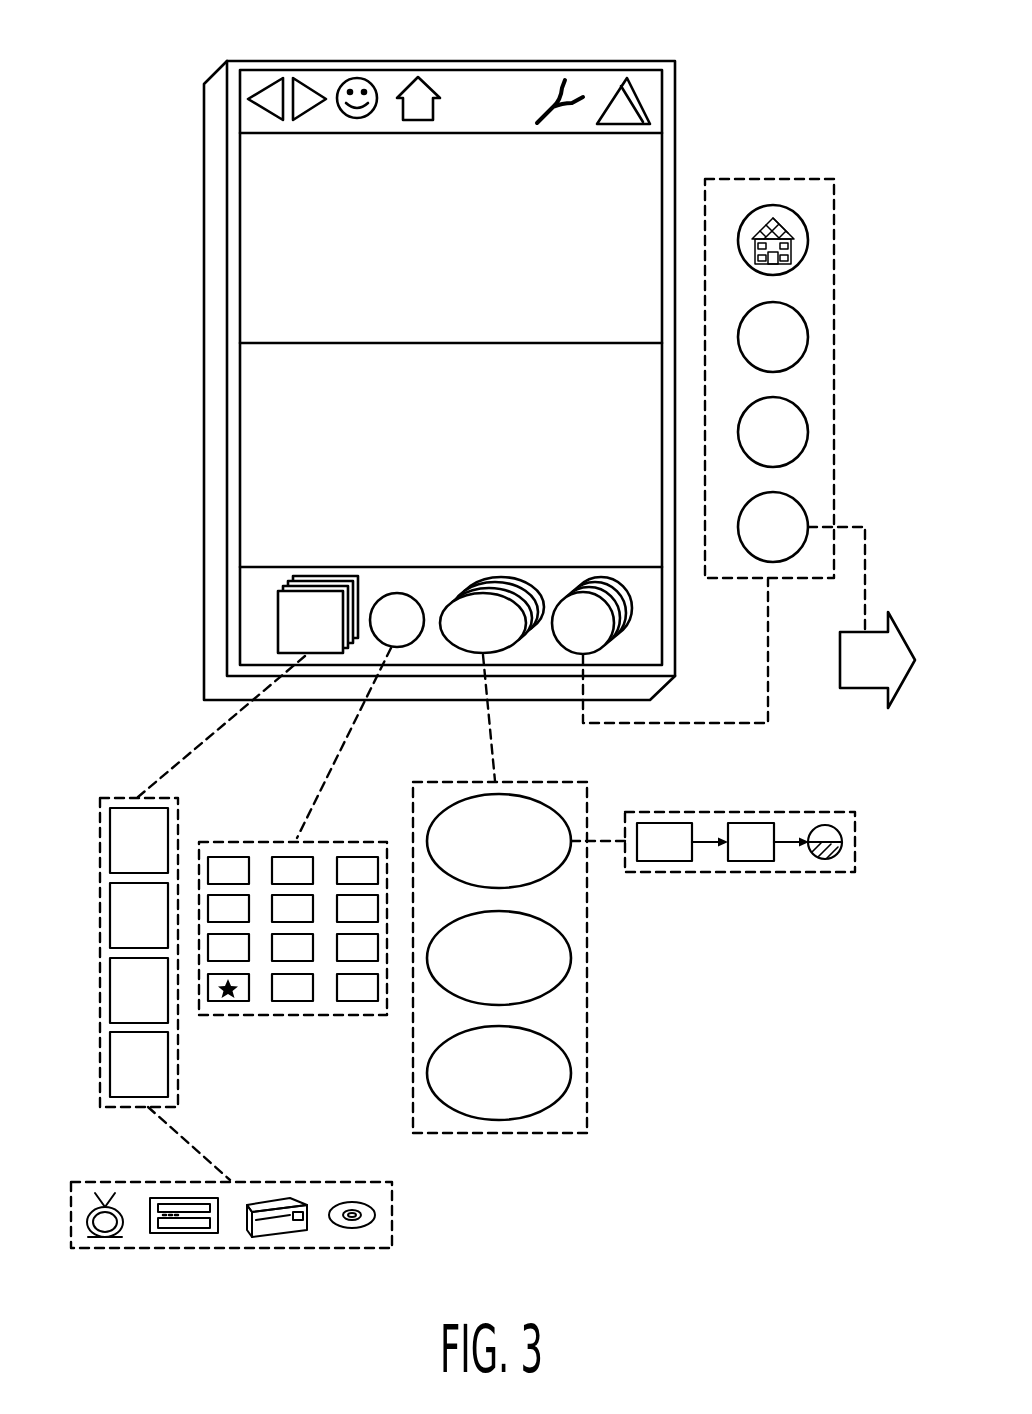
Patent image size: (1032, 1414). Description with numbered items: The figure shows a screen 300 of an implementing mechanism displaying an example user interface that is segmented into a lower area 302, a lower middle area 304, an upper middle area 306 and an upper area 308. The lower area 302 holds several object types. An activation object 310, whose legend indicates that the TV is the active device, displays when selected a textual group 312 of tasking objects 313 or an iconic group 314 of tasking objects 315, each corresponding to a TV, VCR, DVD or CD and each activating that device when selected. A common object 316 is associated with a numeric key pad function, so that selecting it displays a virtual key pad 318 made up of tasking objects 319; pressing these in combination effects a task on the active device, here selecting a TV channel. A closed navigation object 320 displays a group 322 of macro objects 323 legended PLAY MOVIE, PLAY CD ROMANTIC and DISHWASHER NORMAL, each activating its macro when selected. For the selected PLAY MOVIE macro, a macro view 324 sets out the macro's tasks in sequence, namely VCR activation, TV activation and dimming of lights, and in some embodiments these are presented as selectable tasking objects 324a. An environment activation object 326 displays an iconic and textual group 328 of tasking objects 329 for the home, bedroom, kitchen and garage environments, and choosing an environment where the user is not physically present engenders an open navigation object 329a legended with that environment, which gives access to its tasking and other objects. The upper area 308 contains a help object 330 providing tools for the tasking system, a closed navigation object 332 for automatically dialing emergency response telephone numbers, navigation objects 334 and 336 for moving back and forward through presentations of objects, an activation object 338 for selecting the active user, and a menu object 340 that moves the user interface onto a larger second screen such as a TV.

The screen 300 is at (154, 146).
The lower area 302 is at (248, 595).
The lower middle area 304 is at (258, 403).
The upper middle area 306 is at (258, 258).
The upper area 308 is at (653, 82).
The activation object 310 is at (328, 576).
The textual group of tasking objects 312 is at (129, 787).
The tasking objects 313 is at (110, 845).
The iconic group of tasking objects 314 is at (302, 1166).
The tasking objects 315 is at (345, 1228).
The common object 316 is at (400, 590).
The virtual key pad 318 is at (271, 833).
The tasking objects 319 is at (372, 856).
The closed navigation object 320 is at (515, 576).
The group of macro objects 322 is at (531, 1153).
The macro objects 323 is at (560, 870).
The macro view 324 is at (783, 800).
The tasking objects 324a is at (825, 859).
The environment activation object 326 is at (607, 578).
The group of tasking objects 328 is at (803, 150).
The tasking objects 329 is at (808, 243).
The open navigation object 329a is at (866, 690).
The help object 330 is at (553, 80).
The closed navigation object 332 is at (632, 80).
The navigation object 334 is at (270, 79).
The navigation object 336 is at (312, 79).
The activation object 338 is at (370, 78).
The menu object 340 is at (425, 78).